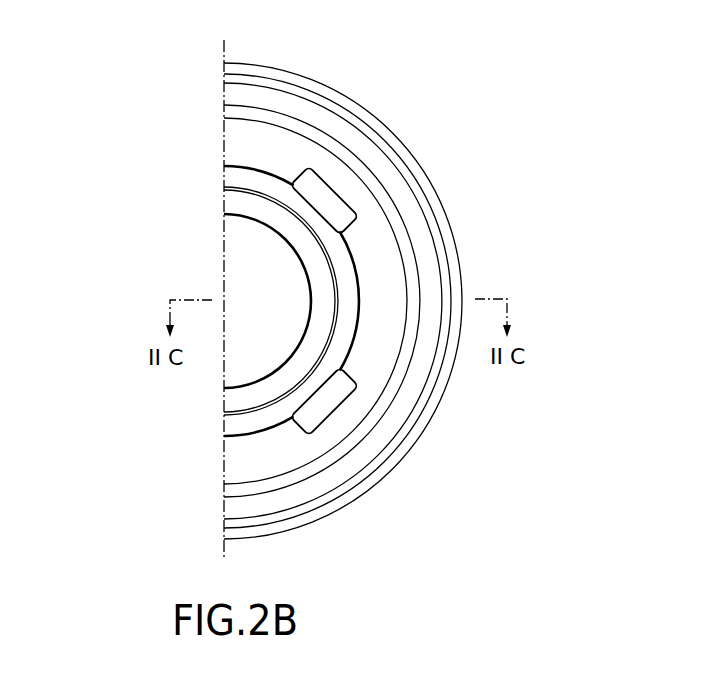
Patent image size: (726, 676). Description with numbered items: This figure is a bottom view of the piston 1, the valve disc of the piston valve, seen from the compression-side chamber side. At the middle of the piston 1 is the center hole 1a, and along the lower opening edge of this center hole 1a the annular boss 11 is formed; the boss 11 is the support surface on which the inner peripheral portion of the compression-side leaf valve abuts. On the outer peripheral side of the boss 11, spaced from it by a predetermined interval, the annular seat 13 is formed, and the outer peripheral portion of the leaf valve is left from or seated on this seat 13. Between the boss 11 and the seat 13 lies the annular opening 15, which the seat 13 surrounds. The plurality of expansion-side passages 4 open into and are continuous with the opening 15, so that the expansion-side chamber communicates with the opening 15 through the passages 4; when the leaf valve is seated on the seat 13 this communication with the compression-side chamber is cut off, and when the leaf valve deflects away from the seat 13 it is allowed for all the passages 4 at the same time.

The piston 1 is at (362, 297).
The center hole 1a is at (246, 219).
The expansion-side passages 4 is at (303, 180).
The annular boss 11 is at (323, 268).
The seat 13 is at (383, 438).
The opening 15 is at (380, 250).